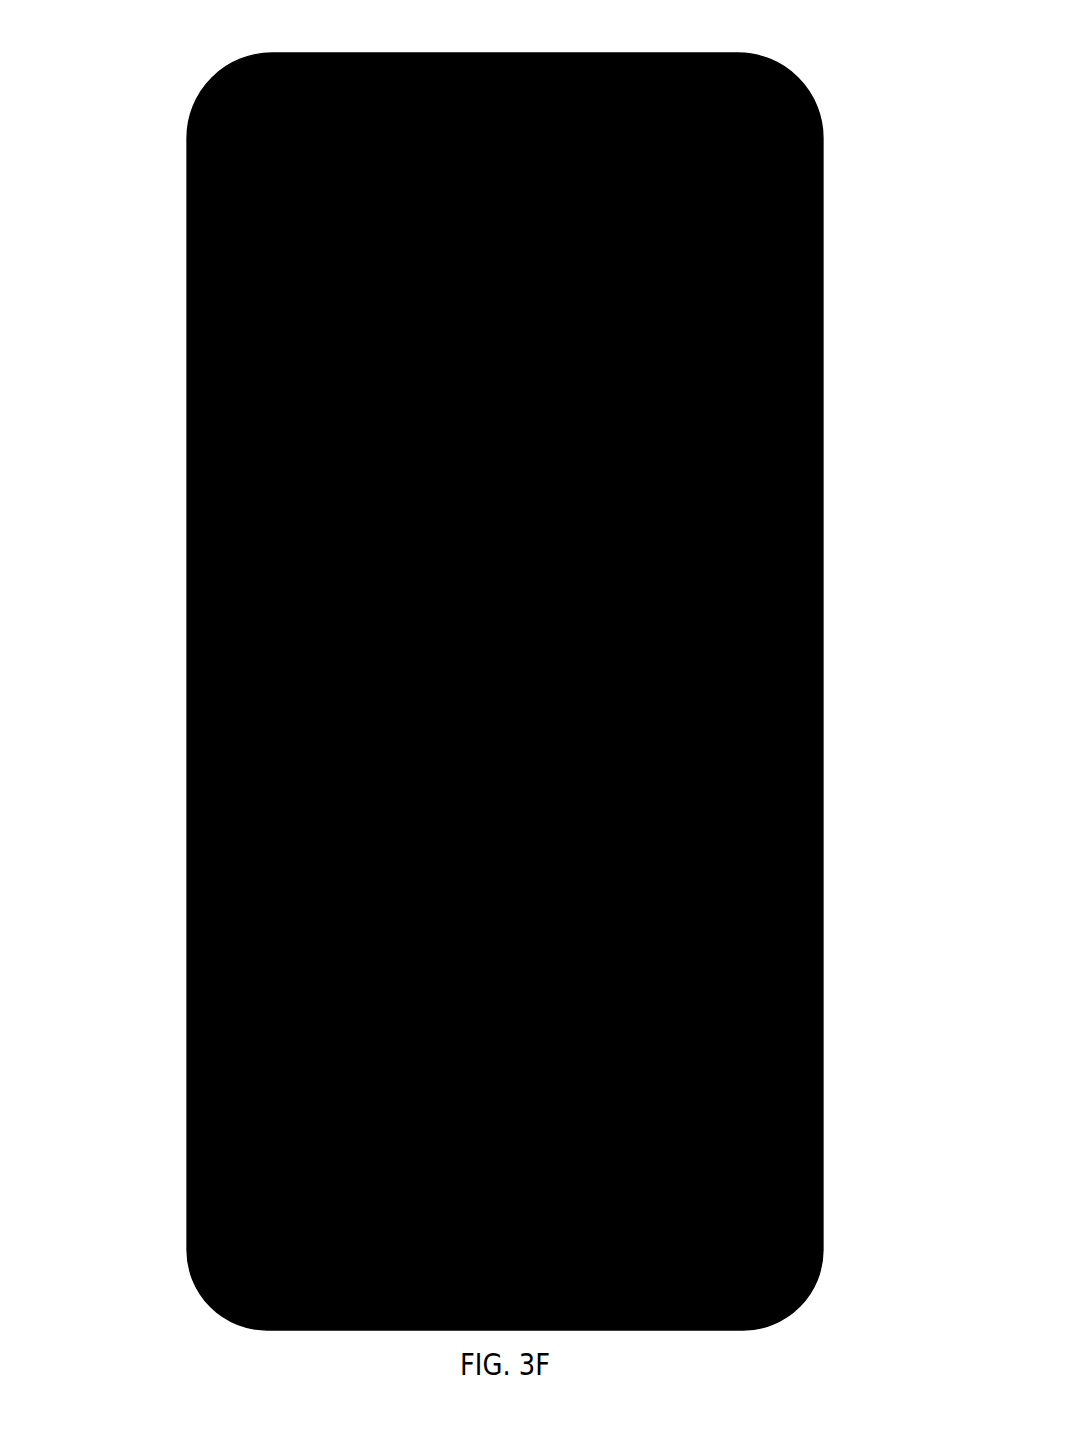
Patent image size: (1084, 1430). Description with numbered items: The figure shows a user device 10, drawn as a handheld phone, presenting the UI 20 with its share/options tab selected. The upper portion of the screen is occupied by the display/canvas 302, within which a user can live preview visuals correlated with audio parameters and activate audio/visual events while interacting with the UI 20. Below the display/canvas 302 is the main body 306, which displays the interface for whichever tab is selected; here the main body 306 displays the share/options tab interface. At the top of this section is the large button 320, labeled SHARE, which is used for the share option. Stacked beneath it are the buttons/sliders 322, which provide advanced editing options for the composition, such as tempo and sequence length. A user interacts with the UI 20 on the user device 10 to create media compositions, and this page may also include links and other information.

The user device 10 is at (505, 665).
The display/canvas 302 is at (780, 545).
The UI 20 is at (232, 815).
The large button 320 is at (770, 818).
The buttons/sliders 322 is at (770, 938).
The main body 306 is at (770, 1072).